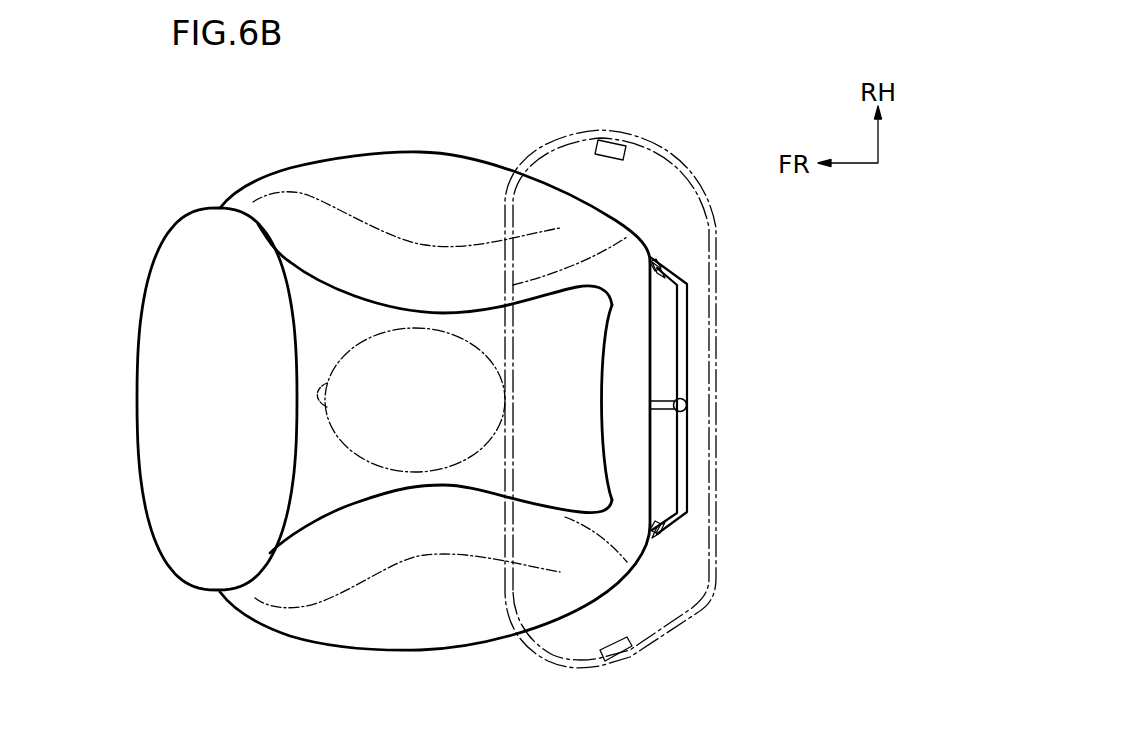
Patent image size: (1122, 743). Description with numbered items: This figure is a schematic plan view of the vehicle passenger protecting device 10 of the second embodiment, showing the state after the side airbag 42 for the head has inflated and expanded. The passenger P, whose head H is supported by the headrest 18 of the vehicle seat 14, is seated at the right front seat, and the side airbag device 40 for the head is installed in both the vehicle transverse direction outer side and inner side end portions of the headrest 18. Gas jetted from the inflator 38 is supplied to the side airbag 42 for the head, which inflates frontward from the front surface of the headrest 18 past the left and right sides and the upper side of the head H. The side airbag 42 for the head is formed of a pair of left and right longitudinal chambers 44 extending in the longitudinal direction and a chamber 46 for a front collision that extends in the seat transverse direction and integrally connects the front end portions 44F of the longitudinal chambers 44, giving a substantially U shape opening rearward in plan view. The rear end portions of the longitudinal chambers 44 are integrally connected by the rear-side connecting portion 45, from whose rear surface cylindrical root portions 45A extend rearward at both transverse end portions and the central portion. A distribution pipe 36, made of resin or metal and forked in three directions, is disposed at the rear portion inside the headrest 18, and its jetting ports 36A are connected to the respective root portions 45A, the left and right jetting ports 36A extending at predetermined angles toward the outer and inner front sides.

The vehicle passenger protecting device 10 is at (462, 131).
The vehicle seat 14 is at (720, 572).
The headrest 18 is at (640, 132).
The distribution pipe 36 is at (690, 422).
The jetting ports 36A is at (660, 292).
The inflator 38 is at (690, 407).
The side airbag device for the head 40 is at (483, 149).
The side airbag for the head 42 is at (423, 149).
The longitudinal chambers 44 is at (345, 165).
The front end portions 44F is at (220, 206).
The rear-side connecting portion 45 is at (633, 338).
The root portions 45A is at (653, 262).
The chamber for a front collision 46 is at (148, 403).
The head H is at (353, 437).
The passenger P is at (331, 366).